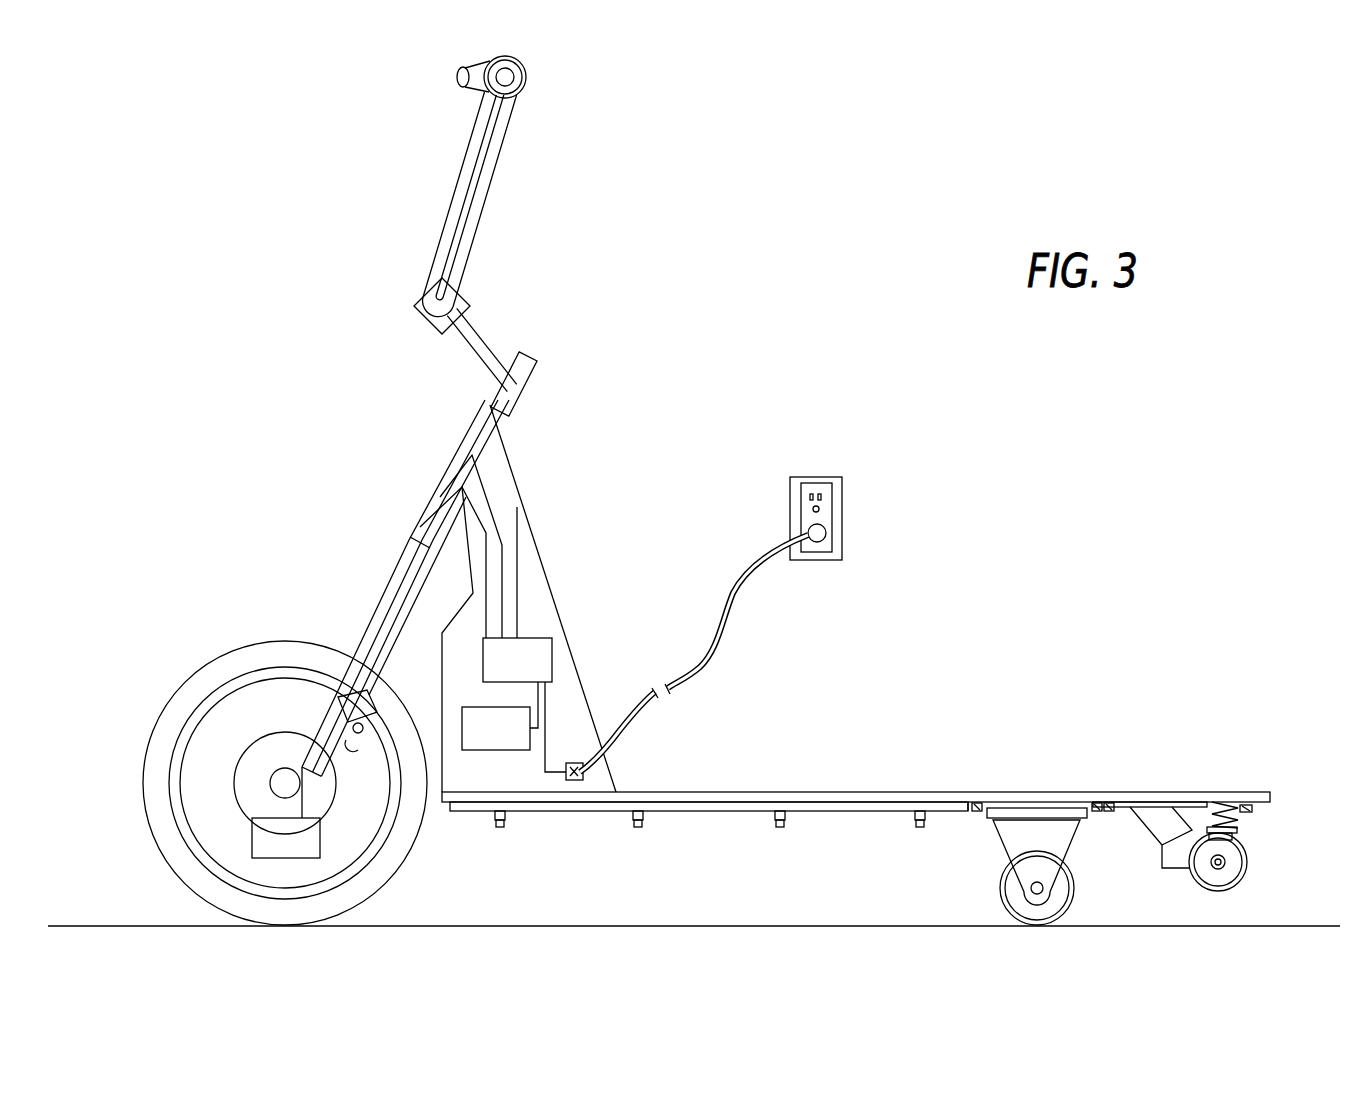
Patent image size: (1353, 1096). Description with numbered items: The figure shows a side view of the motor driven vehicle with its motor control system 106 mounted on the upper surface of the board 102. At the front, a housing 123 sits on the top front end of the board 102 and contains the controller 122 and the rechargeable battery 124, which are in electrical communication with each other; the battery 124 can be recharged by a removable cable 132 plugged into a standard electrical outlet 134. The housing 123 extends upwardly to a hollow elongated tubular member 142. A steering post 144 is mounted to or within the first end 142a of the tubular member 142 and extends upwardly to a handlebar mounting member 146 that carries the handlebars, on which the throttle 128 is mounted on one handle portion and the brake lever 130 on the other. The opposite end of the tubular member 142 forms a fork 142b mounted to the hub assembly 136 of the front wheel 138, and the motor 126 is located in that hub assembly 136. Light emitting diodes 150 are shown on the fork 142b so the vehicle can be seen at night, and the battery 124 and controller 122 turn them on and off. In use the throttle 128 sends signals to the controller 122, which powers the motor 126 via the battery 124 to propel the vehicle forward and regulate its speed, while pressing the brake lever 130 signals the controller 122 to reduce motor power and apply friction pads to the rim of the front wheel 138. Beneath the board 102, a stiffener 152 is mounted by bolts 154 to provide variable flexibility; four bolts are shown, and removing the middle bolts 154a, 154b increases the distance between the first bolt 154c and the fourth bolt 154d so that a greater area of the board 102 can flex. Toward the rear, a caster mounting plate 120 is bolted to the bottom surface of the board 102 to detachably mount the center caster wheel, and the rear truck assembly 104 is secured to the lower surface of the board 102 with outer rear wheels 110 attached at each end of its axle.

The board 102 is at (1155, 792).
The rear truck assembly 104 is at (1182, 883).
The motor control system 106 is at (412, 671).
The outer rear wheels 110 is at (1247, 853).
The caster mounting plate 120 is at (1047, 808).
The controller 122 is at (552, 652).
The housing 123 is at (527, 512).
The rechargeable battery 124 is at (478, 750).
The motor 126 is at (252, 847).
The throttle 128 is at (513, 90).
The brake lever 130 is at (480, 78).
The removable cable 132 is at (712, 652).
The electrical outlet 134 is at (843, 500).
The hub assembly 136 is at (266, 722).
The front wheel 138 is at (158, 801).
The hollow elongated tubular member 142 is at (420, 530).
The first end 142a is at (468, 392).
The fork 142b is at (311, 723).
The steering post 144 is at (525, 372).
The handlebar mounting member 146 is at (490, 333).
The light emitting diodes 150 is at (343, 745).
The stiffener 152 is at (826, 806).
The bolts 154 is at (926, 808).
The middle bolt 154a is at (642, 817).
The middle bolt 154b is at (778, 817).
The first bolt 154c is at (500, 818).
The fourth bolt 154d is at (912, 812).